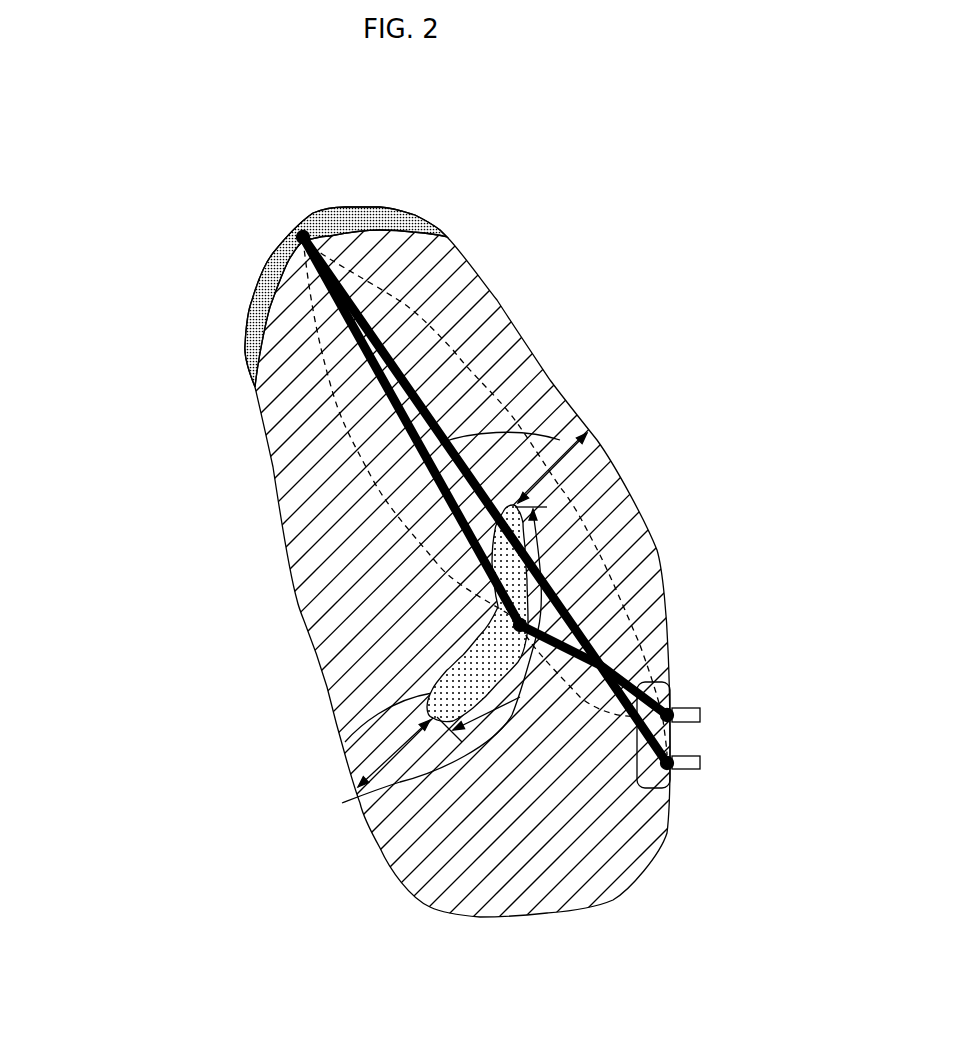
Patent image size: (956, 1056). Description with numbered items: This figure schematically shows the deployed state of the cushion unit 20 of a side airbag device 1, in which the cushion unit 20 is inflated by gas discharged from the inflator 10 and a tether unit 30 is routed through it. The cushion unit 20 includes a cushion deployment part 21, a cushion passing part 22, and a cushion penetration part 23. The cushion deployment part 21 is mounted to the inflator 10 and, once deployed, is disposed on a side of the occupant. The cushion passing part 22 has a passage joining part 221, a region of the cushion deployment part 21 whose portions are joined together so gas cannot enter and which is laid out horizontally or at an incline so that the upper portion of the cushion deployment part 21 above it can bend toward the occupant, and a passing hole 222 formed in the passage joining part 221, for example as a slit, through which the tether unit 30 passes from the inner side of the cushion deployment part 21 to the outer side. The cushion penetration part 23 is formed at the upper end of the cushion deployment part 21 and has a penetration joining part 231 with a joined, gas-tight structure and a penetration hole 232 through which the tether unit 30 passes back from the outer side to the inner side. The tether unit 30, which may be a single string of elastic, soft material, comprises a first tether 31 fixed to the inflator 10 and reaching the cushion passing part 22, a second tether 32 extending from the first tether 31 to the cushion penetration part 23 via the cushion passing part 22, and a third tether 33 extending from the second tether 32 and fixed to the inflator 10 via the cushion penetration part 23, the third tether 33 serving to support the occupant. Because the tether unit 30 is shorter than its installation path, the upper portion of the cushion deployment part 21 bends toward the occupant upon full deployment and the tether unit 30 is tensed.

The side airbag device 1 is at (725, 106).
The inflator 10 is at (683, 782).
The cushion unit 20 is at (83, 240).
The cushion deployment part 21 is at (298, 600).
The cushion passing part 22 is at (157, 750).
The passage joining part 221 is at (345, 742).
The passing hole 222 is at (342, 803).
The cushion penetration part 23 is at (150, 205).
The penetration joining part 231 is at (262, 262).
The penetration hole 232 is at (300, 215).
The tether unit 30 is at (536, 500).
The first tether 31 is at (535, 700).
The second tether 32 is at (417, 405).
The third tether 33 is at (565, 462).